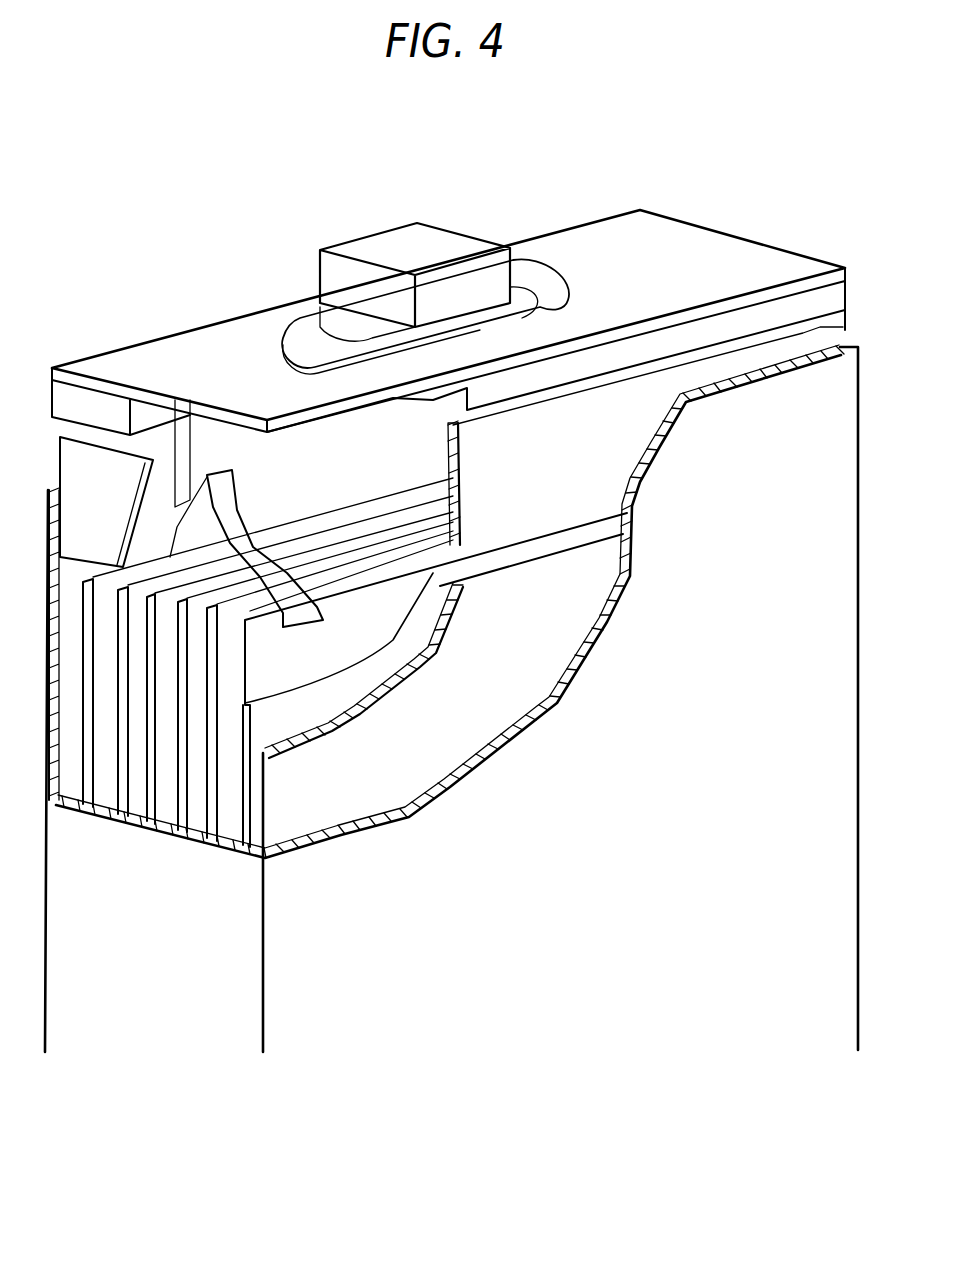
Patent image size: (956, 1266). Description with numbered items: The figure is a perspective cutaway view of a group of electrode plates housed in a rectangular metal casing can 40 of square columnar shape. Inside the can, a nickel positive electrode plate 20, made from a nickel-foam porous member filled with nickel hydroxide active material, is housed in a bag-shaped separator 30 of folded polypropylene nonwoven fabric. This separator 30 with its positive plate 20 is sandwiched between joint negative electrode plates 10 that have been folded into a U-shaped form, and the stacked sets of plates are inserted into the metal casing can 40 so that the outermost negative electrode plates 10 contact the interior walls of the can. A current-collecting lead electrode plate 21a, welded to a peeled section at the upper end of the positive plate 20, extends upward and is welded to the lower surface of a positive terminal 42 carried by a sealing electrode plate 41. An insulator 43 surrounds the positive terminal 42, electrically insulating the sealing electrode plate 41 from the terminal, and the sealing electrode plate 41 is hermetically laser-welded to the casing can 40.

The joint negative electrode plate 10 is at (457, 723).
The nickel positive electrode plate 20 is at (377, 622).
The current-collecting lead electrode plate 21a is at (280, 488).
The separator 30 is at (337, 697).
The metal casing can 40 is at (750, 852).
The sealing electrode plate 41 is at (680, 240).
The positive terminal 42 is at (440, 240).
The insulator 43 is at (305, 310).